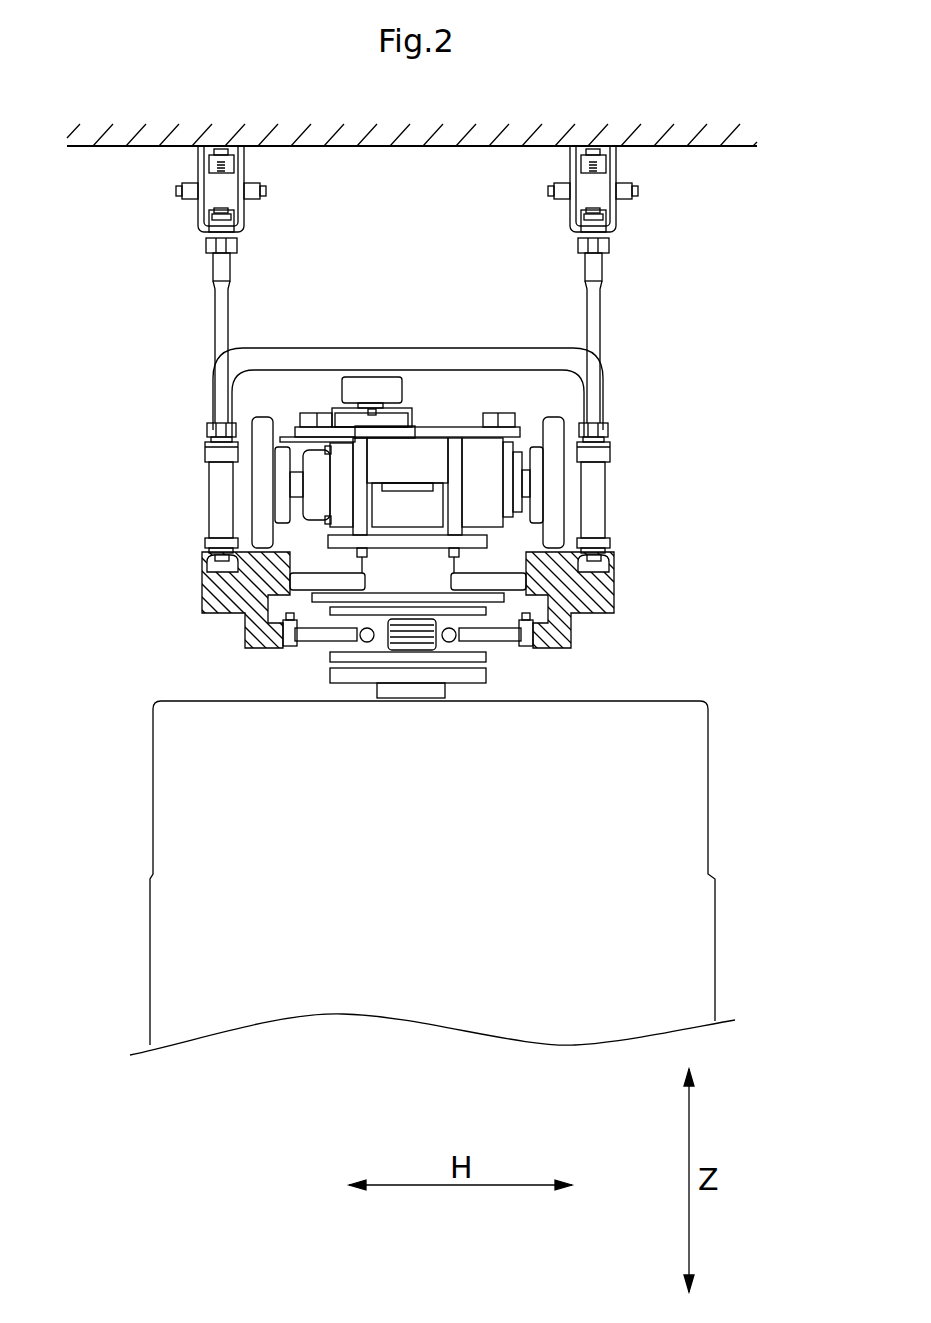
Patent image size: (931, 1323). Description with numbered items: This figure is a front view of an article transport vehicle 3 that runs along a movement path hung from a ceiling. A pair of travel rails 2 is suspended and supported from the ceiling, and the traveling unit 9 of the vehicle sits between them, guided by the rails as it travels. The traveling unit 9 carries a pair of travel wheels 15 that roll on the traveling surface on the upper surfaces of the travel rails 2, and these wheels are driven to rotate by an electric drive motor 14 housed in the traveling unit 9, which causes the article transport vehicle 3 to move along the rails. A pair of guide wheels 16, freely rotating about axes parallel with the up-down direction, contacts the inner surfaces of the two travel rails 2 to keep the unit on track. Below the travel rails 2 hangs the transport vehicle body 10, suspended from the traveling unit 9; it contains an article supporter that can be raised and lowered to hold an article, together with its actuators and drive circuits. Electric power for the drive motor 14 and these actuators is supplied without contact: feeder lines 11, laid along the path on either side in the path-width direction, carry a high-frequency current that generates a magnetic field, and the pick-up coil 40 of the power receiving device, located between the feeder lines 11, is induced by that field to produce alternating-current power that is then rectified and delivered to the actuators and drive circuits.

The article transport vehicle 3 is at (718, 394).
The traveling unit 9 is at (438, 402).
The drive motor 14 is at (290, 447).
The travel wheels 15 is at (253, 492).
The travel rails 2 is at (202, 578).
The guide wheels 16 is at (499, 578).
The feeder line 11 is at (328, 640).
The pick-up coil 40 is at (428, 648).
The transport vehicle body 10 is at (692, 922).